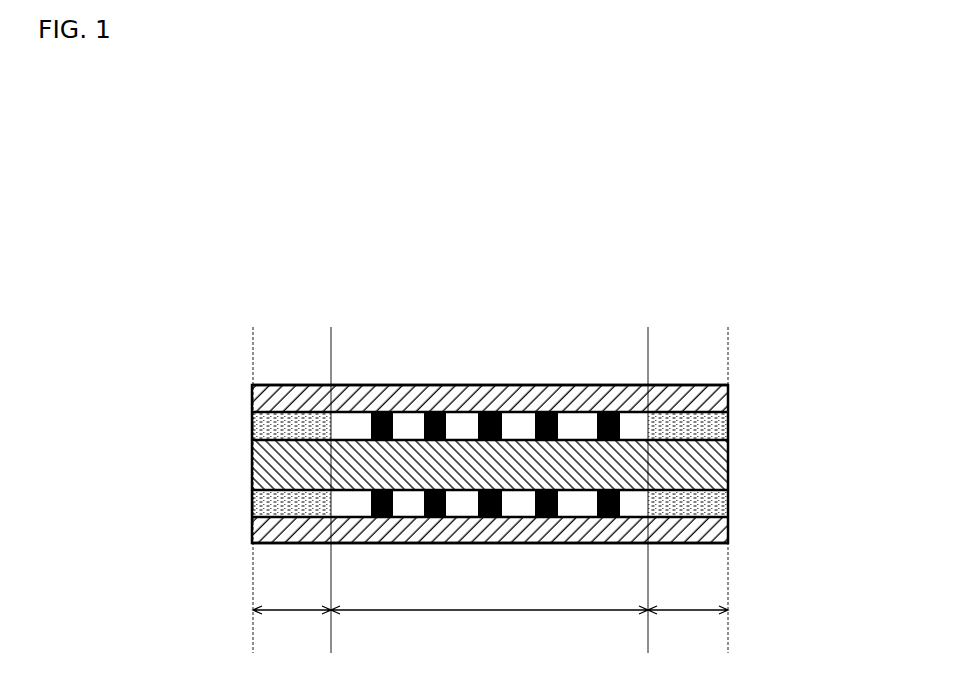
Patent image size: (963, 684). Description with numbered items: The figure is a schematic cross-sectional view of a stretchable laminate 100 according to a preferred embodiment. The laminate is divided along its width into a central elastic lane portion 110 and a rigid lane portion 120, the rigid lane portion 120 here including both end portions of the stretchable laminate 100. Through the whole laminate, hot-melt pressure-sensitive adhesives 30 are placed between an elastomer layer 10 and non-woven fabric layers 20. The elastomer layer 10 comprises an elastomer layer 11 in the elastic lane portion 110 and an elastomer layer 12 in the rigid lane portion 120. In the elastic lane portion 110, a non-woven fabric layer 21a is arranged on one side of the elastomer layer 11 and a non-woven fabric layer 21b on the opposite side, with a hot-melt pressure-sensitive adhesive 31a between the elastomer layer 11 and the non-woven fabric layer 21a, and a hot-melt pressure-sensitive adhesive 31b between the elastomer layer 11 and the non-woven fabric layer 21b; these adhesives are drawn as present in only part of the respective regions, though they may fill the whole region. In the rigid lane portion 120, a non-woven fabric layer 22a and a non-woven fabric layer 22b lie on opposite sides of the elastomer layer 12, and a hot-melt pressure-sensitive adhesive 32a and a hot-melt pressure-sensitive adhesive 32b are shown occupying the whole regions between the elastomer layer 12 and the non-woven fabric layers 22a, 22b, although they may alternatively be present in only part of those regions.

The stretchable laminate 100 is at (528, 305).
The elastomer layer 10 is at (477, 334).
The elastomer layer 11 is at (450, 468).
The elastomer layer 12 is at (308, 467).
The non-woven fabric layers 20 is at (482, 435).
The non-woven fabric layer 21a is at (396, 385).
The non-woven fabric layer 21b is at (596, 542).
The non-woven fabric layer 22a is at (288, 385).
The non-woven fabric layer 22b is at (293, 543).
The hot-melt pressure-sensitive adhesives 30 is at (482, 413).
The hot-melt pressure-sensitive adhesive 31a is at (505, 418).
The hot-melt pressure-sensitive adhesive 31b is at (480, 503).
The hot-melt pressure-sensitive adhesive 32a is at (295, 425).
The hot-melt pressure-sensitive adhesive 32b is at (305, 505).
The elastic lane portion 110 is at (489, 627).
The rigid lane portion 120 is at (490, 627).